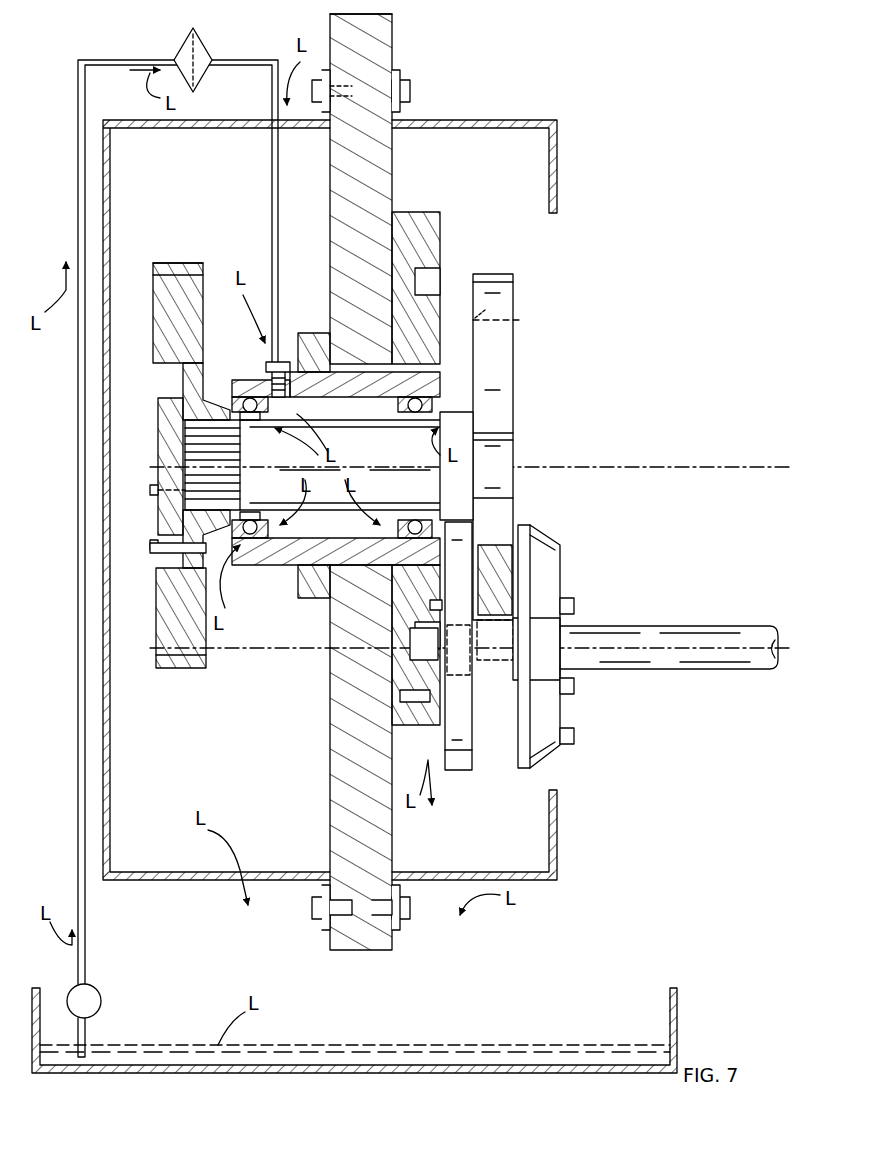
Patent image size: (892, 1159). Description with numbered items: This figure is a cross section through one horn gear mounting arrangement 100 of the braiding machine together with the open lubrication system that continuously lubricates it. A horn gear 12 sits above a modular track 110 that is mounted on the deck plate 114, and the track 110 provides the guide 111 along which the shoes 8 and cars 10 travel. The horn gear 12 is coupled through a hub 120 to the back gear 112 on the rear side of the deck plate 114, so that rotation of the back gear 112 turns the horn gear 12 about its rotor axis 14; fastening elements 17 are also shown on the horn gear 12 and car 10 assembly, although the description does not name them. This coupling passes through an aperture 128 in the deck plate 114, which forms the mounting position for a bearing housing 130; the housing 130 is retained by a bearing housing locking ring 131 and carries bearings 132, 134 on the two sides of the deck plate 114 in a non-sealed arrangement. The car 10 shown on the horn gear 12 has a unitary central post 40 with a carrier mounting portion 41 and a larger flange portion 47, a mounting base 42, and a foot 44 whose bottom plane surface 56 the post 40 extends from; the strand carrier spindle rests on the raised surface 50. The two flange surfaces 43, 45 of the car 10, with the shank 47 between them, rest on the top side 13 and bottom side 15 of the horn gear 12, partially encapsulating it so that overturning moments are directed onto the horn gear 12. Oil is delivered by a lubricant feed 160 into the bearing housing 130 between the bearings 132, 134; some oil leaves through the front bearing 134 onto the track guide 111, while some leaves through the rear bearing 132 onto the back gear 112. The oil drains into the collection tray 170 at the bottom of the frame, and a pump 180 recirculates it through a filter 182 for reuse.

The shoe 8 is at (436, 605).
The car 10 is at (692, 598).
The horn gear 12 is at (522, 292).
The top side of horn gear 13 is at (508, 560).
The rotor axis 14 is at (520, 465).
The bottom side of horn gear 15 is at (462, 545).
The fastener 17 is at (525, 312).
The central post 40 is at (715, 622).
The carrier mounting portion 41 is at (702, 672).
The mounting base 42 is at (560, 750).
The flange surface 43 is at (500, 768).
The foot 44 is at (462, 775).
The flange surface 45 is at (480, 770).
The flange portion 47 is at (492, 672).
The raised surface 50 is at (550, 658).
The bottom plane surface 56 is at (420, 735).
The mounting arrangement 100 is at (612, 368).
The modular track 110 is at (445, 218).
The guide 111 is at (433, 283).
The back gear 112 is at (183, 668).
The deck plate 114 is at (383, 178).
The hub 120 is at (175, 380).
The aperture 128 is at (375, 390).
The bearing housing 130 is at (430, 370).
The bearing housing locking ring 131 is at (310, 598).
The bearing 132 is at (252, 395).
The bearing 134 is at (425, 405).
The lubricant feed 160 is at (130, 60).
The collection tray 170 is at (678, 996).
The pump 180 is at (102, 1000).
The filter 182 is at (203, 45).